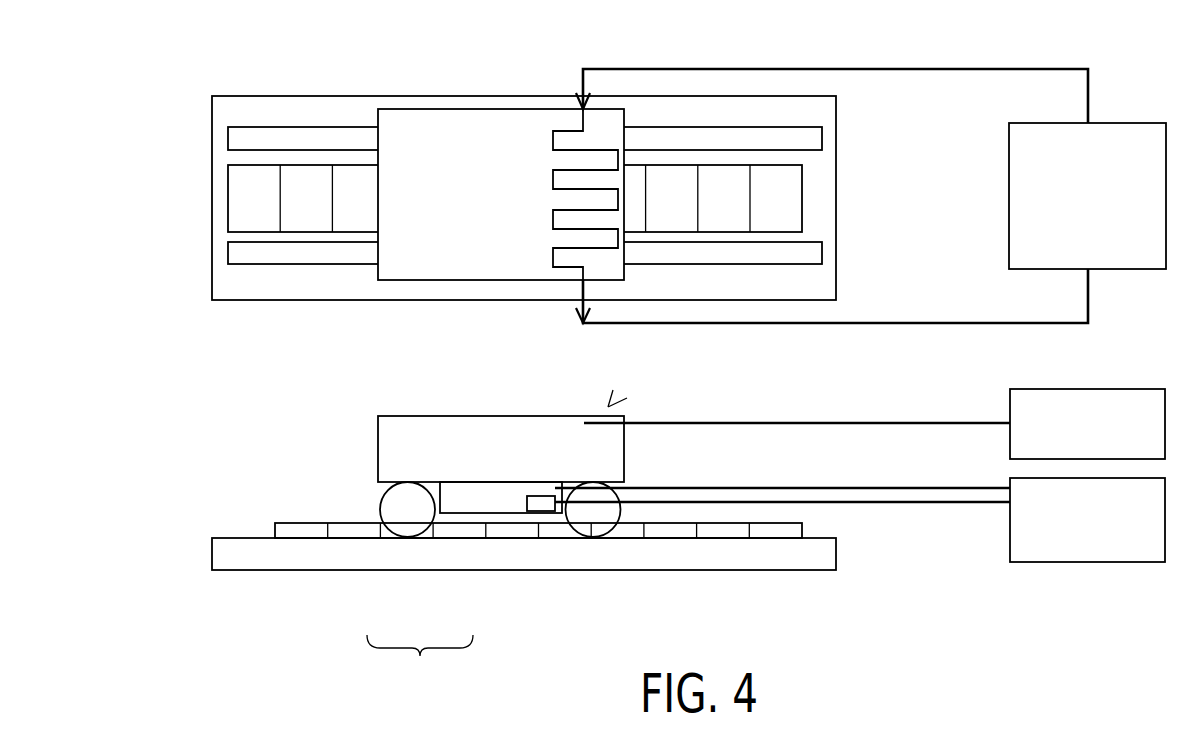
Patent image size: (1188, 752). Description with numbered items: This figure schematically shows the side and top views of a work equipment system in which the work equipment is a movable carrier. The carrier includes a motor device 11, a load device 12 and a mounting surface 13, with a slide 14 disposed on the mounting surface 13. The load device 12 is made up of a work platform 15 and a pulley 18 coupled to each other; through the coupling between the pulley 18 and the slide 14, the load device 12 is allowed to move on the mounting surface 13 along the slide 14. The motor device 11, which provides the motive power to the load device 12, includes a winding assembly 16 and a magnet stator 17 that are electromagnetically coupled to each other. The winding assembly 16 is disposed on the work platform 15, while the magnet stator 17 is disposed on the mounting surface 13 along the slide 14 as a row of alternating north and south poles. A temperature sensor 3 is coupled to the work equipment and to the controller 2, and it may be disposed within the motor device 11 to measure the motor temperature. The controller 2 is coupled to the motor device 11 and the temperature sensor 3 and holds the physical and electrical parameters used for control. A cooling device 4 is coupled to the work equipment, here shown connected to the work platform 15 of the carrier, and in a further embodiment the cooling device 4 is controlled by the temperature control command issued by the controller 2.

The controller 2 is at (1140, 562).
The temperature sensor 3 is at (542, 503).
The cooling device 4 is at (1137, 123).
The motor device 11 is at (420, 663).
The load device 12 is at (608, 407).
The mounting surface 13 is at (262, 288).
The slide 14 is at (245, 255).
The work platform 15 is at (417, 127).
The winding assembly 16 is at (476, 500).
The magnet stator 17 is at (790, 187).
The pulley 18 is at (393, 507).